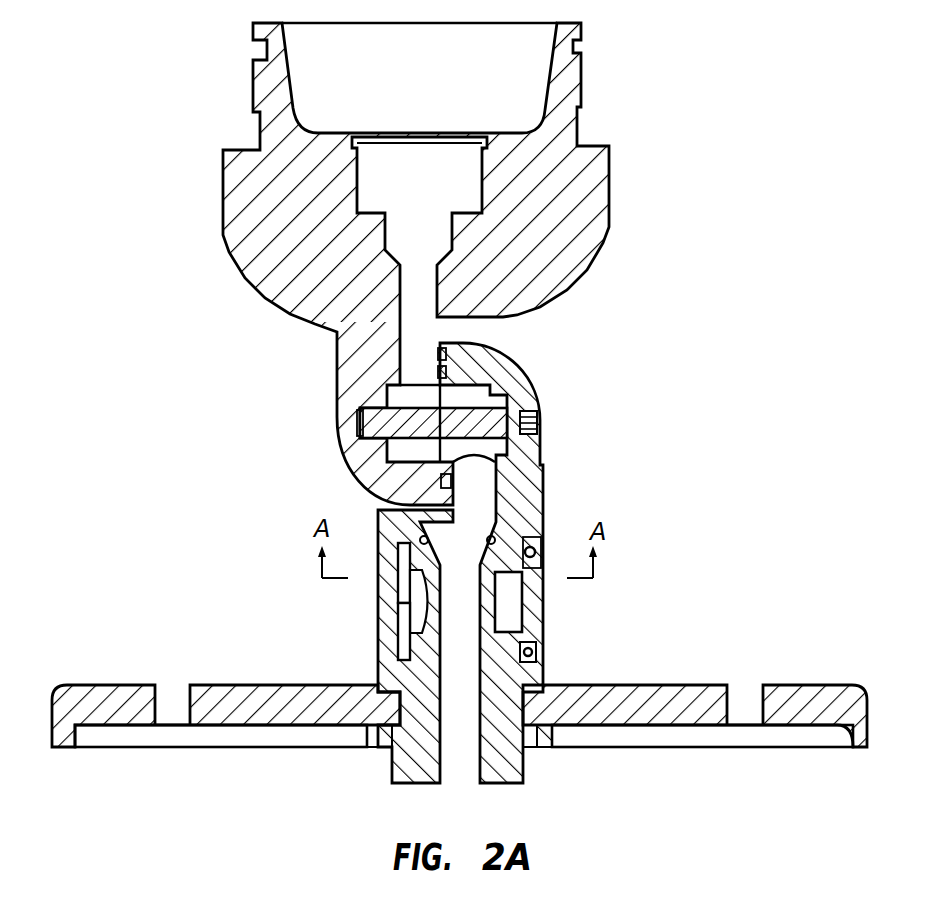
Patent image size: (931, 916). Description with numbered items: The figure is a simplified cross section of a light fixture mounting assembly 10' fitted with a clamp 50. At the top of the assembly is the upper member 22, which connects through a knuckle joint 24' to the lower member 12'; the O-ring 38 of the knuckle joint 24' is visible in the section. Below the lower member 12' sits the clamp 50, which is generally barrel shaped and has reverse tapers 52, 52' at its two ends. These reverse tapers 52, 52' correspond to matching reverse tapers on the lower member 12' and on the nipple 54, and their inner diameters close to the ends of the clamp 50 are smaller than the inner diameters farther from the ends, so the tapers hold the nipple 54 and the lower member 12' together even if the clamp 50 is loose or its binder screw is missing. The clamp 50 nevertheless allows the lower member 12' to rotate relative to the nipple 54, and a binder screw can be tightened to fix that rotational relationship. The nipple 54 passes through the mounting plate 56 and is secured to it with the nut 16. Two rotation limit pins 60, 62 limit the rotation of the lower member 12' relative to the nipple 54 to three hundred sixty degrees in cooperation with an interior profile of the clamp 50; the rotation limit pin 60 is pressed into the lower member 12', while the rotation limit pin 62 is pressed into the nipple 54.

The light fixture mounting assembly 10' is at (538, 83).
The upper member 22 is at (337, 385).
The knuckle joint 24' is at (520, 425).
The lower member 12' is at (530, 563).
The O-ring 38 is at (447, 341).
The clamp 50 is at (543, 616).
The reverse taper 52 is at (559, 533).
The reverse taper 52' is at (567, 653).
The nipple 54 is at (492, 610).
The mounting plate 56 is at (712, 685).
The rotation limit pin 60 is at (400, 590).
The rotation limit pin 62 is at (400, 634).
The nut 16 is at (530, 735).